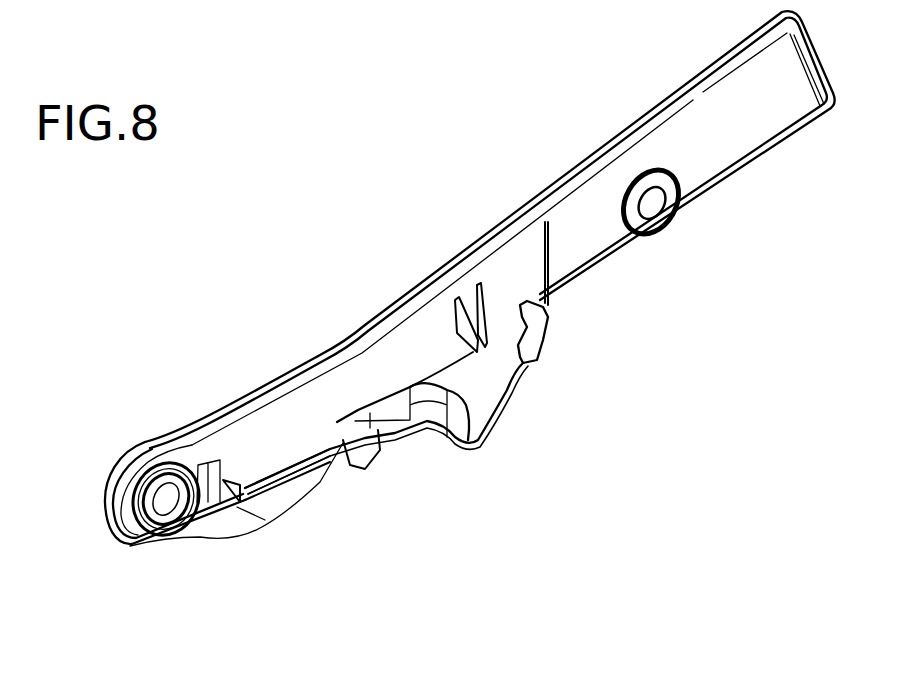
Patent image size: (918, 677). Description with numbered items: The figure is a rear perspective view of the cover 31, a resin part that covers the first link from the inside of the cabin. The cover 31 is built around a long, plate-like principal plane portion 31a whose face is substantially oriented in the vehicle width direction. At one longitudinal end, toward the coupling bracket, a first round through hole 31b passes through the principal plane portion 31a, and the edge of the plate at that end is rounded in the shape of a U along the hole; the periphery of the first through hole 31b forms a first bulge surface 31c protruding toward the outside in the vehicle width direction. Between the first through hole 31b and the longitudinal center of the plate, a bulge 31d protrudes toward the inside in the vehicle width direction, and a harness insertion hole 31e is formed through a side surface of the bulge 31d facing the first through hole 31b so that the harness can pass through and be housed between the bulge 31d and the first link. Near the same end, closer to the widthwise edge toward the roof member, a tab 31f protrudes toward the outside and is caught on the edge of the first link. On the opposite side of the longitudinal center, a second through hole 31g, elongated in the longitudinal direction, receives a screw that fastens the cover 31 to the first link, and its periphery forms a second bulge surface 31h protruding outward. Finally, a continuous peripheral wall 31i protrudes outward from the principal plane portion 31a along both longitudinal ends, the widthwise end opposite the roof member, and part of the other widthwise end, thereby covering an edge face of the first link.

The cover 31 is at (572, 102).
The principal plane portion 31a is at (760, 123).
The first through hole 31b is at (167, 503).
The first bulge surface 31c is at (156, 462).
The bulge 31d is at (317, 410).
The harness insertion hole 31e is at (246, 490).
The tab 31f is at (357, 466).
The second through hole 31g is at (648, 212).
The second bulge surface 31h is at (628, 218).
The peripheral wall 31i is at (473, 272).